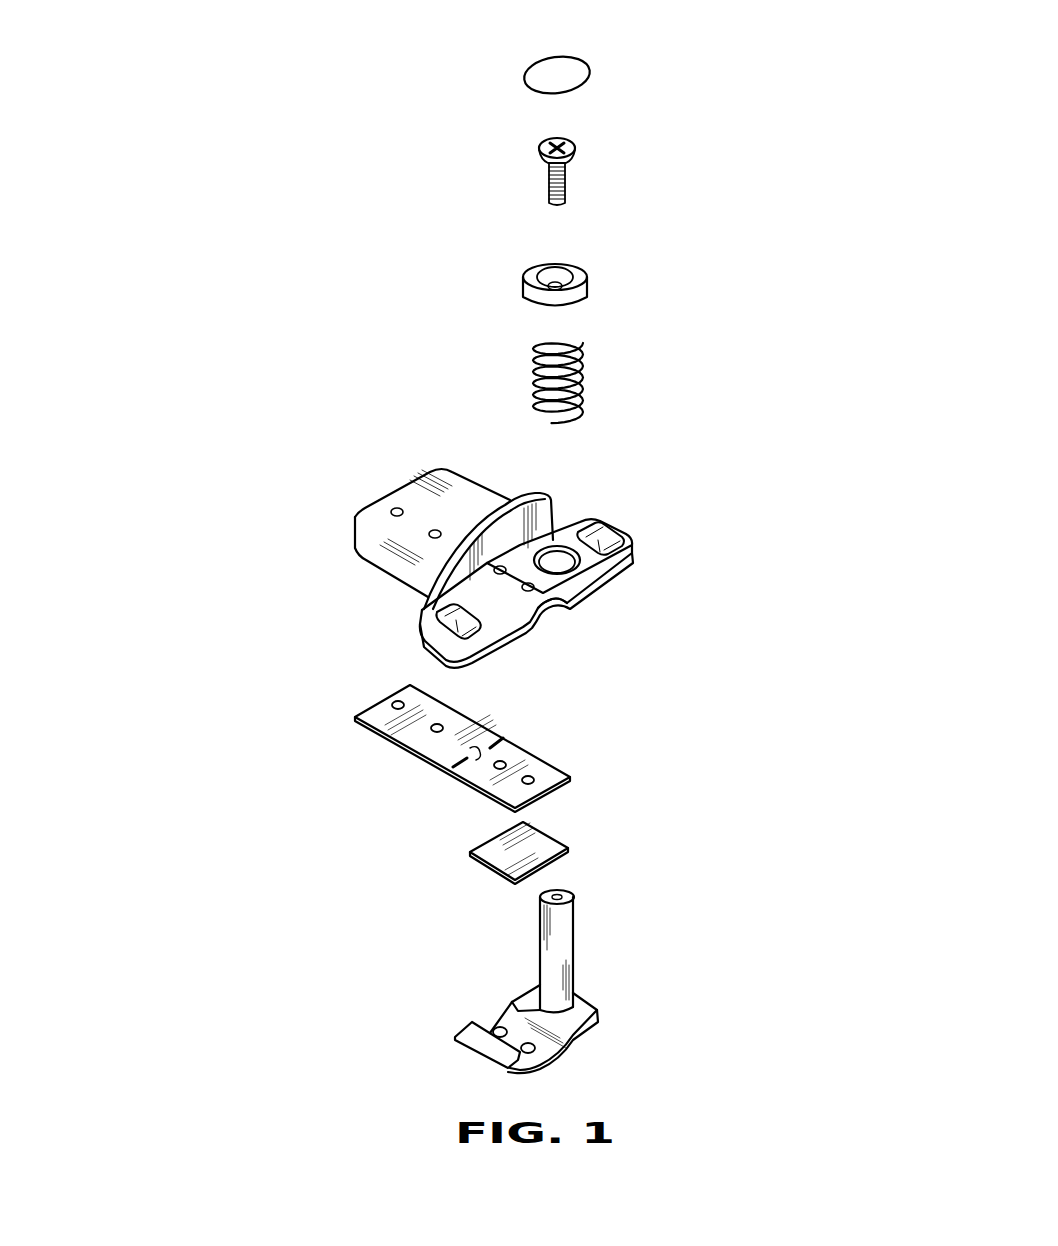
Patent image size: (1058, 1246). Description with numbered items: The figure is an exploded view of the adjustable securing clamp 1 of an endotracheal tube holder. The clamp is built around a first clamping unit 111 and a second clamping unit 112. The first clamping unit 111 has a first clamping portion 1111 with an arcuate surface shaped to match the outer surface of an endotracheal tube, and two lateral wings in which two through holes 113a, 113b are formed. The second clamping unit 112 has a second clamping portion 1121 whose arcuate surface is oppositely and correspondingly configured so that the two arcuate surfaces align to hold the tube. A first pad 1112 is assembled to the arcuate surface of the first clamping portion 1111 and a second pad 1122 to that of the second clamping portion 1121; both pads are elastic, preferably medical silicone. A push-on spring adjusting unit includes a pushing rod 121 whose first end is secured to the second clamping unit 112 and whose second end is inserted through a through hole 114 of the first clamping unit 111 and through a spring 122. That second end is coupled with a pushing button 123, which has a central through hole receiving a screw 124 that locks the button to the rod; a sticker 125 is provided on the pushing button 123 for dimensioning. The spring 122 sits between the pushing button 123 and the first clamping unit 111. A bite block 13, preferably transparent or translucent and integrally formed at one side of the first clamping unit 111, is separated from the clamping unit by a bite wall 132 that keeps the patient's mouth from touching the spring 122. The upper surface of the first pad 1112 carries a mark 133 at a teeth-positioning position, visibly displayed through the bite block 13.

The adjustable securing clamp 1 is at (213, 203).
The first clamping unit 111 is at (552, 574).
The second clamping unit 112 is at (633, 983).
The first clamping portion 1111 is at (540, 617).
The first pad 1112 is at (524, 752).
The second clamping portion 1121 is at (507, 1012).
The second pad 1122 is at (555, 842).
The through hole 113a is at (597, 540).
The through hole 113b is at (450, 620).
The through hole 114 is at (557, 553).
The pushing rod 121 is at (565, 937).
The spring 122 is at (582, 368).
The pushing button 123 is at (582, 273).
The screw 124 is at (567, 168).
The sticker 125 is at (567, 73).
The bite block 13 is at (412, 493).
The bite wall 132 is at (513, 500).
The mark 133 is at (463, 757).